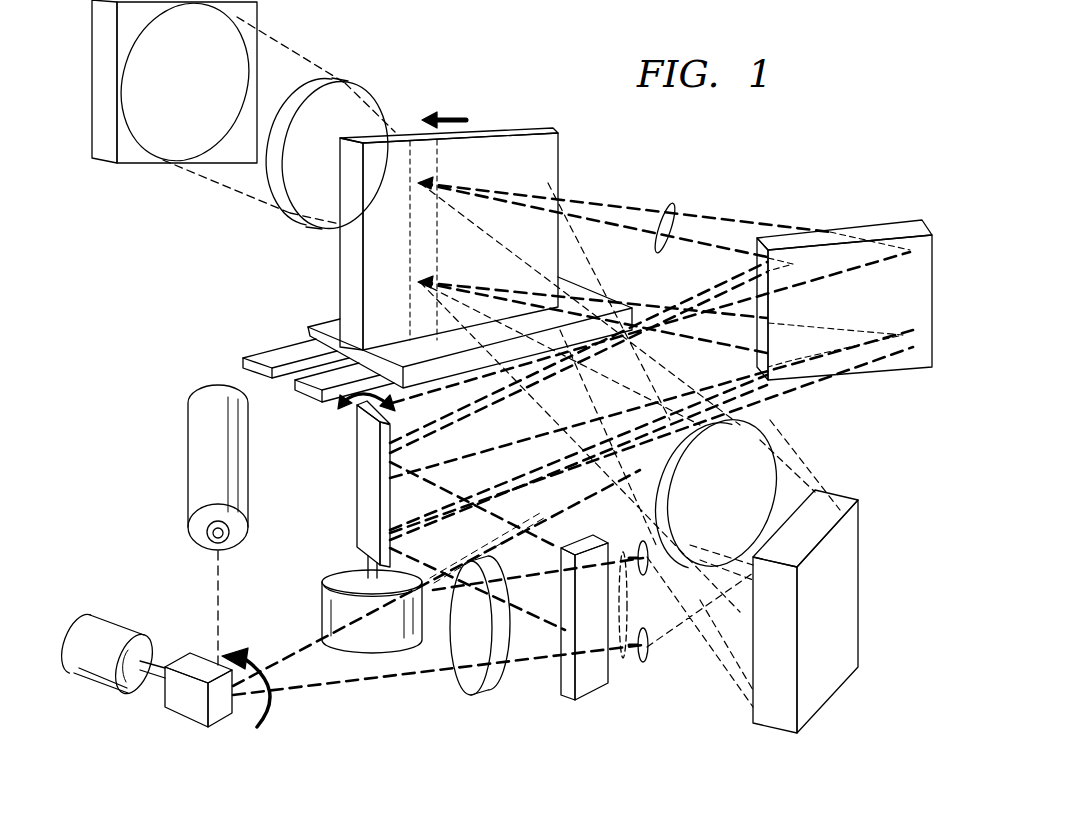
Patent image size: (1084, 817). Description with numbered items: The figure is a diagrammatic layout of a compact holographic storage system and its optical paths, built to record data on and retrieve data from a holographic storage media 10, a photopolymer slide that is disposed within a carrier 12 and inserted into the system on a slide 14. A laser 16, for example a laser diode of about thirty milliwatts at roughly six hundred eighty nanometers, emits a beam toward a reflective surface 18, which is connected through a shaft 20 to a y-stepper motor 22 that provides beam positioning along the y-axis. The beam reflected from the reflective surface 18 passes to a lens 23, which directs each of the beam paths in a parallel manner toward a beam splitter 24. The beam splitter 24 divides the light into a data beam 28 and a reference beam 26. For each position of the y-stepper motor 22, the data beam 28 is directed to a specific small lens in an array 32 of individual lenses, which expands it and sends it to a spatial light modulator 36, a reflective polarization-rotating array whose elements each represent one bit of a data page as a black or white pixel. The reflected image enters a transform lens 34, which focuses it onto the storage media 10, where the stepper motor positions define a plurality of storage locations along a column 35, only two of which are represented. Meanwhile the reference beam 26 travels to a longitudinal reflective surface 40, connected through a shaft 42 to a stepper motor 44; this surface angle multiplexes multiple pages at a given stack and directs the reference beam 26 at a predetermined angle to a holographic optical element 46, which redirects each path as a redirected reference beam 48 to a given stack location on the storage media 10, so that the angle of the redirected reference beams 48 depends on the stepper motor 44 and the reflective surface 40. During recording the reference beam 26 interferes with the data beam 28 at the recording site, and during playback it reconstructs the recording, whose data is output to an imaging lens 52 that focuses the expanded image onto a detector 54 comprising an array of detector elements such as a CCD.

The holographic storage media 10 is at (553, 158).
The carrier 12 is at (572, 294).
The slide 14 is at (265, 358).
The laser 16 is at (190, 477).
The reflective surface 18 is at (200, 712).
The shaft 20 is at (152, 688).
The y-stepper motor 22 is at (118, 632).
The lens 23 is at (470, 690).
The beam splitter 24 is at (588, 692).
The reference beam 26 is at (522, 524).
The data beam 28 is at (623, 660).
The array of individual lenses 32 is at (640, 552).
The transform lens 34 is at (772, 440).
The column 35 is at (440, 176).
The spatial light modulator 36 is at (835, 683).
The reflective surface 40 is at (360, 494).
The shaft 42 is at (365, 560).
The stepper motor 44 is at (325, 610).
The holographic optical element 46 is at (905, 232).
The redirected reference beam 48 is at (672, 205).
The imaging lens 52 is at (342, 80).
The detector 54 is at (128, 152).